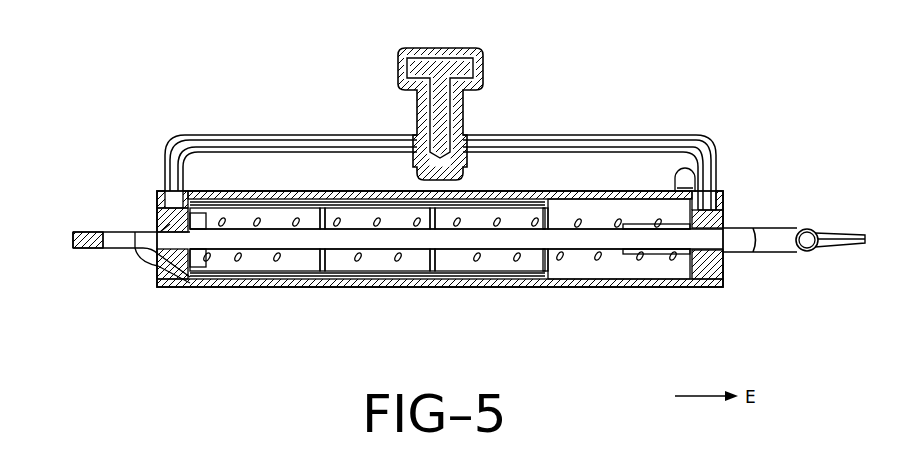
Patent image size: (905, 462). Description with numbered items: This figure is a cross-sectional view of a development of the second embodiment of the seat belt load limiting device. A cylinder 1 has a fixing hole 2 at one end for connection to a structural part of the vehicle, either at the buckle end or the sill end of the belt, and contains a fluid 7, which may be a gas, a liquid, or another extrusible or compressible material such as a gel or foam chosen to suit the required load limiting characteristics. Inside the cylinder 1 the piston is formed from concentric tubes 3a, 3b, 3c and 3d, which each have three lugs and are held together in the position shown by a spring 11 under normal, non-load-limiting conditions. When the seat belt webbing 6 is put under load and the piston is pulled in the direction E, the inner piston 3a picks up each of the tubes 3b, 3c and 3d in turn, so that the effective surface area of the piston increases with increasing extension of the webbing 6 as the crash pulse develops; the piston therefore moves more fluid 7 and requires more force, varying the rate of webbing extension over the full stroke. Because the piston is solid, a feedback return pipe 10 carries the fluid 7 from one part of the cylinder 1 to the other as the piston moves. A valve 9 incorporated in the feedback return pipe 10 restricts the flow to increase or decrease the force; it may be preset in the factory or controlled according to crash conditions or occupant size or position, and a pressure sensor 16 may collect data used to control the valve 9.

The cylinder 1 is at (612, 286).
The fixing hole 2 is at (118, 232).
The inner piston 3a is at (197, 265).
The concentric tube 3b is at (283, 272).
The concentric tube 3c is at (380, 285).
The concentric tube 3d is at (503, 283).
The seat belt webbing 6 is at (845, 236).
The fluid 7 is at (675, 272).
The valve 9 is at (422, 68).
The feedback return pipe 10 is at (530, 135).
The spring 11 is at (605, 252).
The pressure sensor 16 is at (684, 172).